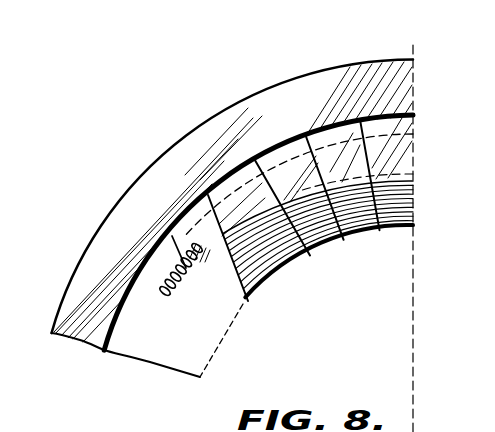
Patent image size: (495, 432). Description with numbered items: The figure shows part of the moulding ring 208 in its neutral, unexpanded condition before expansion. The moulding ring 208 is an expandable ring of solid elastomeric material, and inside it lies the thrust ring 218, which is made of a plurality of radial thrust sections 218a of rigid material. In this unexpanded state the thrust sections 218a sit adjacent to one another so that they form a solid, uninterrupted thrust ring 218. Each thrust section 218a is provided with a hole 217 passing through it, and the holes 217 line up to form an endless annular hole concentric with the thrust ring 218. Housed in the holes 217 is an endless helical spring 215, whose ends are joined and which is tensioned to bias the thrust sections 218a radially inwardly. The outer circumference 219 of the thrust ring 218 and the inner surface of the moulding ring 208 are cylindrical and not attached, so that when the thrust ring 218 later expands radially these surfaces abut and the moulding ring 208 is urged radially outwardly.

The moulding ring 208 is at (249, 118).
The hole 217 is at (344, 70).
The outer circumference of the thrust ring 219 is at (219, 178).
The thrust ring 218 is at (282, 155).
The thrust section 218a is at (257, 297).
The helical spring 215 is at (162, 282).